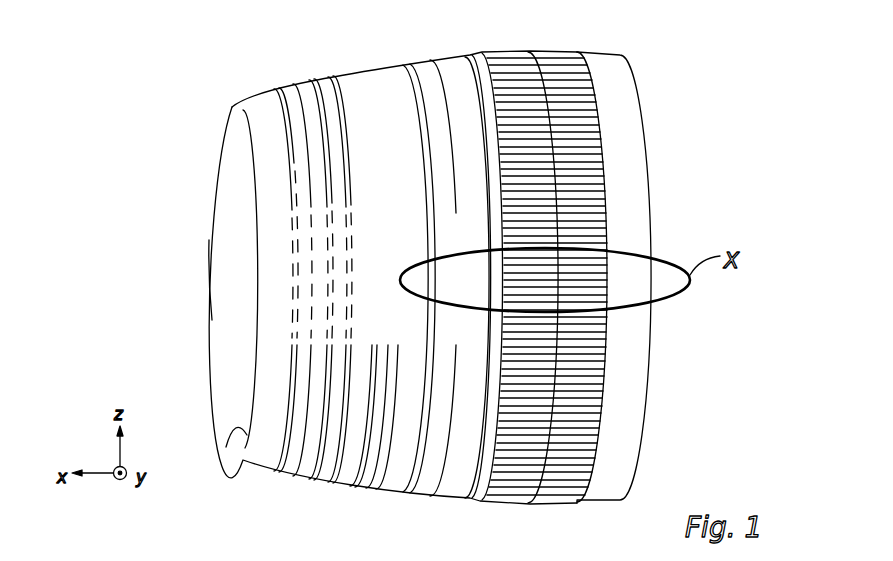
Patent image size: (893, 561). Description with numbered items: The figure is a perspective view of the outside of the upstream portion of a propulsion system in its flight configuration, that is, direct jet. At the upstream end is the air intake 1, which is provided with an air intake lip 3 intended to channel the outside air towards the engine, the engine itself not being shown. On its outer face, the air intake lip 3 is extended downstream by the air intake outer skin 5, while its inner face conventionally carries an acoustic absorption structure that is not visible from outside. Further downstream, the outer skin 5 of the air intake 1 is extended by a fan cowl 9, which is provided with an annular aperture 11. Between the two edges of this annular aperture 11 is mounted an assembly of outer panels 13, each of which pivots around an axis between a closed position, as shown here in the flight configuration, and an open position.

The air intake 1 is at (243, 464).
The air intake lip 3 is at (208, 313).
The air intake outer skin 5 is at (343, 468).
The fan cowl 9 is at (453, 468).
The annular aperture 11 is at (606, 368).
The outer panels 13 is at (583, 180).